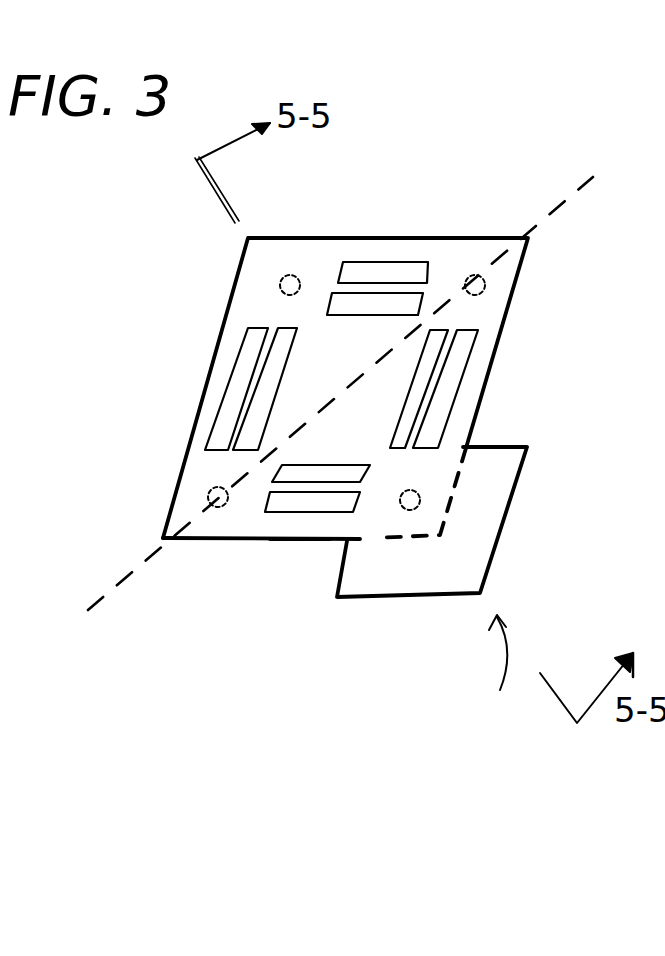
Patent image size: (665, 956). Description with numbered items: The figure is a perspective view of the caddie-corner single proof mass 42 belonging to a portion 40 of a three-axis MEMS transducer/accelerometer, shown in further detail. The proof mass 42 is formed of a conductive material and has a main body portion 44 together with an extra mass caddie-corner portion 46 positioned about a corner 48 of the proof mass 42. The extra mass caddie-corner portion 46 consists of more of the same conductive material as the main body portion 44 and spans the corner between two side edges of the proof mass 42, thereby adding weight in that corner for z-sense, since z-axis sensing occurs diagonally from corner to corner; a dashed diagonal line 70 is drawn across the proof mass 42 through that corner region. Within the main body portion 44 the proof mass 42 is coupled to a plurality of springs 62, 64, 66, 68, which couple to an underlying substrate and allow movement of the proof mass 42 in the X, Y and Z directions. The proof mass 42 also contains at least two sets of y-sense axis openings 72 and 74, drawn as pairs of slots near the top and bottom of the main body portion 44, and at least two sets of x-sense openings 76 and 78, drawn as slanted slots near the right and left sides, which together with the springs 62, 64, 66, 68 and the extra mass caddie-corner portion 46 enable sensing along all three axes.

The portion of a three-axis MEMS transducer/accelerometer 40 is at (525, 122).
The proof mass 42 is at (228, 306).
The main body portion 44 is at (292, 528).
The extra mass caddie-corner portion 46 is at (434, 573).
The corner 48 is at (481, 670).
The spring 62 is at (314, 268).
The spring 64 is at (468, 278).
The spring 66 is at (413, 489).
The spring 68 is at (216, 488).
The fold axis 70 is at (580, 197).
The y-sense axis openings 72 is at (388, 307).
The y-sense axis openings 74 is at (303, 472).
The x-sense openings 76 is at (443, 372).
The x-sense openings 78 is at (265, 383).